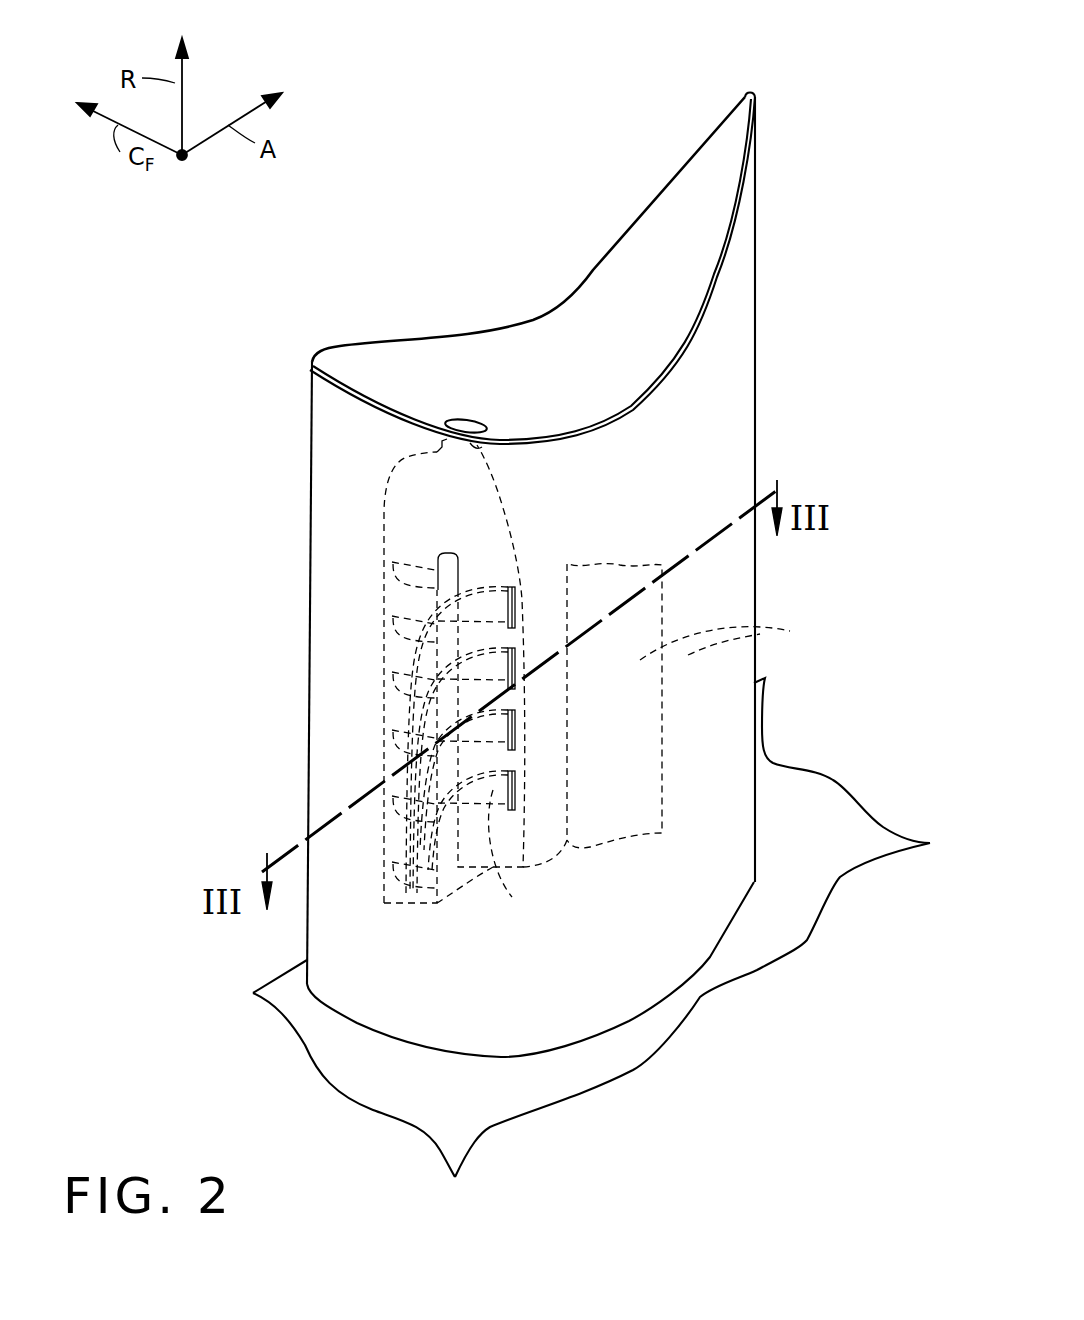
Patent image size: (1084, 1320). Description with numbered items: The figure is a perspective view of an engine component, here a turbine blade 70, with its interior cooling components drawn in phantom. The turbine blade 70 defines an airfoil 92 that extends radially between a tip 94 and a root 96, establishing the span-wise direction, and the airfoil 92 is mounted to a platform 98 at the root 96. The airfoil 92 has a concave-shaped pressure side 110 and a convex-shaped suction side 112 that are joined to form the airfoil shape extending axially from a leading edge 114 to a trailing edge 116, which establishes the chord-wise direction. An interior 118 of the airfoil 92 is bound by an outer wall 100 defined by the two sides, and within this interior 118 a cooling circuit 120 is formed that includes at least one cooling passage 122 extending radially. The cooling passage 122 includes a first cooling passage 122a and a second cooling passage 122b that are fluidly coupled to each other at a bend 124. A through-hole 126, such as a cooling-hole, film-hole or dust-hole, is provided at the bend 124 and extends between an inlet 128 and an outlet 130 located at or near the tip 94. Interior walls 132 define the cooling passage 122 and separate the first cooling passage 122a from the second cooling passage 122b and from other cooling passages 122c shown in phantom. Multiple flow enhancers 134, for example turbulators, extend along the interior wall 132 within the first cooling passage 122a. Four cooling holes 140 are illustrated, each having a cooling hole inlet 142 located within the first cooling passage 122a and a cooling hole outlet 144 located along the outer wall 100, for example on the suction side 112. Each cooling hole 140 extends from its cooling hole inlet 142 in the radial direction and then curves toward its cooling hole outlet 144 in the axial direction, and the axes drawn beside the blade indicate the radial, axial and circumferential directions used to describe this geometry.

The turbine blade 70 is at (448, 60).
The airfoil 92 is at (648, 160).
The tip 94 is at (545, 353).
The root 96 is at (710, 957).
The platform 98 is at (287, 988).
The outer wall 100 is at (570, 997).
The pressure side 110 is at (597, 272).
The suction side 112 is at (687, 357).
The leading edge 114 is at (367, 413).
The trailing edge 116 is at (749, 92).
The interior 118 is at (475, 870).
The cooling circuit 120 is at (512, 575).
The cooling passage 122 is at (380, 498).
The first cooling passage 122a is at (395, 651).
The second cooling passage 122b is at (522, 642).
The other cooling passages 122c is at (686, 715).
The bend 124 is at (467, 545).
The through-hole 126 is at (477, 445).
The inlet 128 is at (462, 470).
The outlet 130 is at (473, 421).
The interior walls 132 is at (405, 765).
The flow enhancer 134 is at (435, 637).
The cooling hole 140 is at (512, 897).
The cooling hole inlet 142 is at (400, 722).
The cooling hole outlet 144 is at (512, 735).